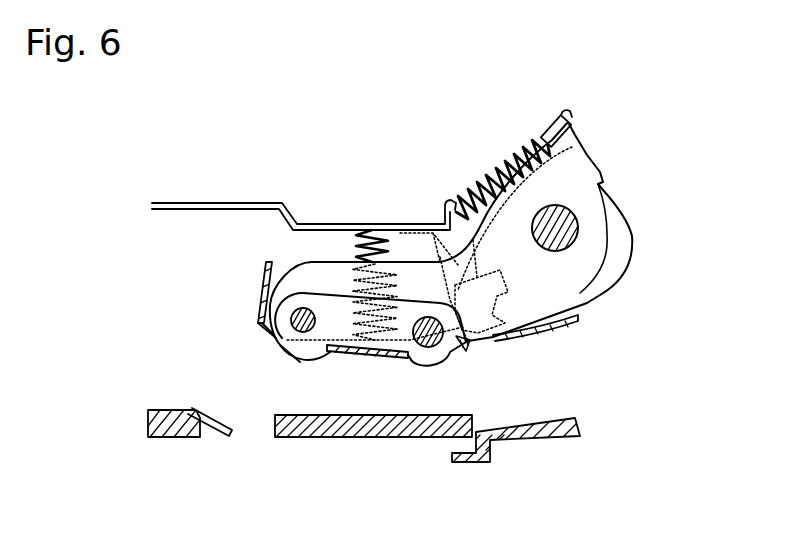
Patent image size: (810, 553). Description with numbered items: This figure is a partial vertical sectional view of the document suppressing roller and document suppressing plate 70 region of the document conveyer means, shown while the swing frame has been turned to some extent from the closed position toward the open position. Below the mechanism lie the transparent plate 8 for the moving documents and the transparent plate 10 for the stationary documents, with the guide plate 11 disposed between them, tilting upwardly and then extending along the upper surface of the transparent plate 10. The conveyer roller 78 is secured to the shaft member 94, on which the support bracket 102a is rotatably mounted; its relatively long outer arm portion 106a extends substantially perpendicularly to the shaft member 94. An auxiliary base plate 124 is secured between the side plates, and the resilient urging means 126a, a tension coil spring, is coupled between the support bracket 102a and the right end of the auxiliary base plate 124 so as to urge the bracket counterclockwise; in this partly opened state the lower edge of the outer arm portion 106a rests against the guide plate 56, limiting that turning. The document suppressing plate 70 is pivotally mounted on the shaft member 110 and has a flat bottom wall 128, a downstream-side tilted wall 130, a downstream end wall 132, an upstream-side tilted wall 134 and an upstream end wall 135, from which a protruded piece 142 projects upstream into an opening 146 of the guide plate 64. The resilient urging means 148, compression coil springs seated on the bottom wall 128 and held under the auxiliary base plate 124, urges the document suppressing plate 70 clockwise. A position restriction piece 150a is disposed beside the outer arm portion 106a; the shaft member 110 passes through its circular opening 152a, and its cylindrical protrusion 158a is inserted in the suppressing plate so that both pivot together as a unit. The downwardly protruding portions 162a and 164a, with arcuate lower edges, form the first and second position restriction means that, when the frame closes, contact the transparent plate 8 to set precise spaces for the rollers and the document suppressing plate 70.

The auxiliary base plate 124 is at (226, 203).
The outer arm portion 106a is at (332, 262).
The resilient urging means 148 is at (377, 228).
The resilient urging means 126a is at (488, 182).
The opening 146 is at (460, 267).
The shaft member 94 is at (580, 216).
The conveyer roller 78 is at (627, 213).
The support bracket 102a is at (612, 233).
The protruded piece 142 is at (497, 270).
The guide plate 64 is at (460, 330).
The guide plate 56 is at (550, 331).
The upstream end wall 135 is at (517, 333).
The upstream-side tilted wall 134 is at (460, 352).
The position restriction piece 150a is at (310, 286).
The downstream end wall 132 is at (262, 270).
The circular opening 152a is at (297, 317).
The document suppressing plate 70 is at (250, 312).
The downstream-side tilted wall 130 is at (263, 328).
The shaft member 110 is at (277, 330).
The transparent plate for the stationary documents 10 is at (168, 440).
The guide plate 11 is at (218, 432).
The protruded portion 162a is at (299, 370).
The bottom wall 128 is at (345, 357).
The transparent plate for the moving documents 8 is at (365, 438).
The protruded portion 164a is at (424, 348).
The cylindrical protrusion 158a is at (428, 362).